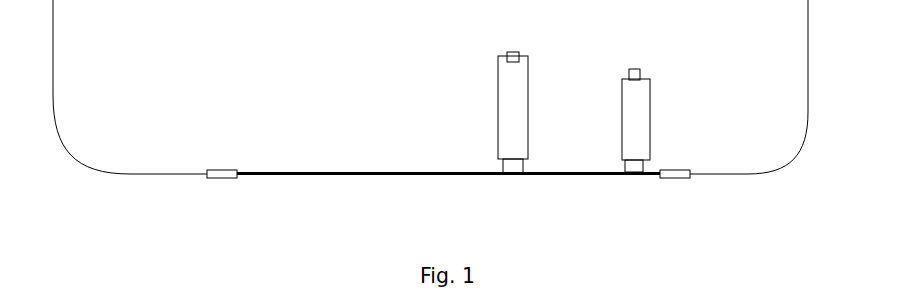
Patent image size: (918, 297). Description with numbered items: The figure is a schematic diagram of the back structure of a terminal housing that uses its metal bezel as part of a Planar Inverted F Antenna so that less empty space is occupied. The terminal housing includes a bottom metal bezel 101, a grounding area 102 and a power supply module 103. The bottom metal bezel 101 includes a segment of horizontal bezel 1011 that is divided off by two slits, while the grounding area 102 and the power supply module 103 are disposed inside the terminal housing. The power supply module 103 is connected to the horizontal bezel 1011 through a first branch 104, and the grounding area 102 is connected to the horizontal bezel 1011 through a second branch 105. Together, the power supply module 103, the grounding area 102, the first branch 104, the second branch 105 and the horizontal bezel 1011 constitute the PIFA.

The bottom metal bezel 101 is at (757, 174).
The horizontal bezel 1011 is at (378, 176).
The grounding area 102 is at (512, 52).
The power supply module 103 is at (638, 71).
The first branch 104 is at (650, 115).
The second branch 105 is at (528, 110).